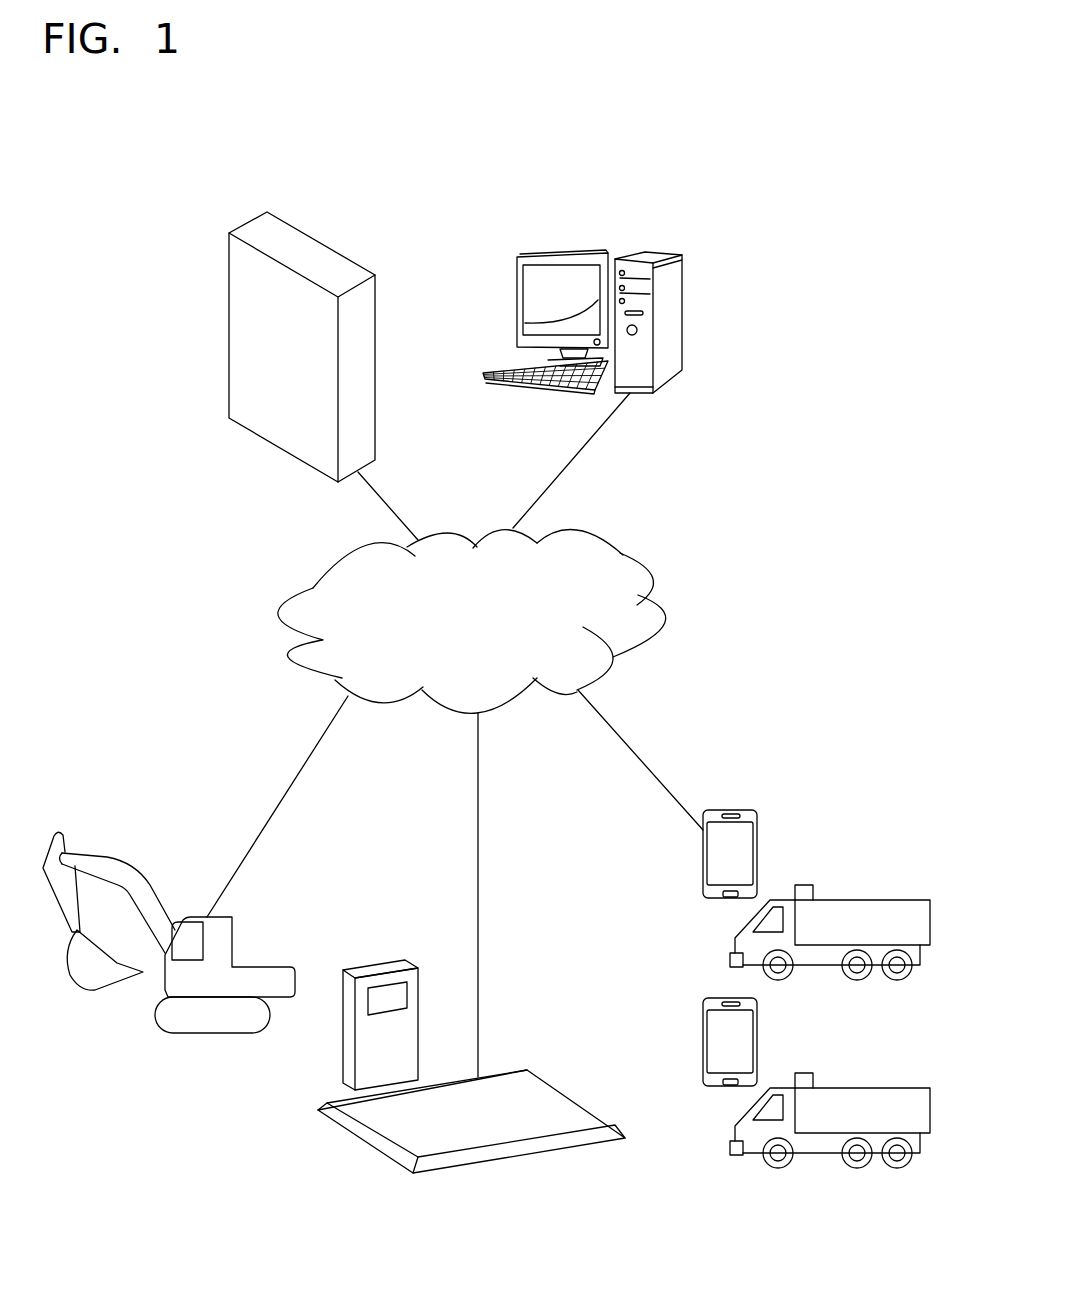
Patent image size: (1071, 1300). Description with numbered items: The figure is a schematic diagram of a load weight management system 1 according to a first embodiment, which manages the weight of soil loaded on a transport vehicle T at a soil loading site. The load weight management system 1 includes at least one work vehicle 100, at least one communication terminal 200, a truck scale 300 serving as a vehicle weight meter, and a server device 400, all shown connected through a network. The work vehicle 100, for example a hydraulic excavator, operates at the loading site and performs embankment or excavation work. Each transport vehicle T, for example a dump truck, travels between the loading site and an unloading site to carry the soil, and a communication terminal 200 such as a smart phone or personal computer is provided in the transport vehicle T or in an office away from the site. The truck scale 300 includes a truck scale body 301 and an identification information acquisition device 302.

The load weight management system 1 is at (708, 128).
The work vehicle 100 is at (191, 916).
The communication terminal 200 is at (661, 255).
The truck scale 300 is at (472, 1177).
The truck scale body 301 is at (543, 1100).
The identification information acquisition device 302 is at (377, 962).
The server device 400 is at (325, 244).
The transport vehicle T is at (752, 920).